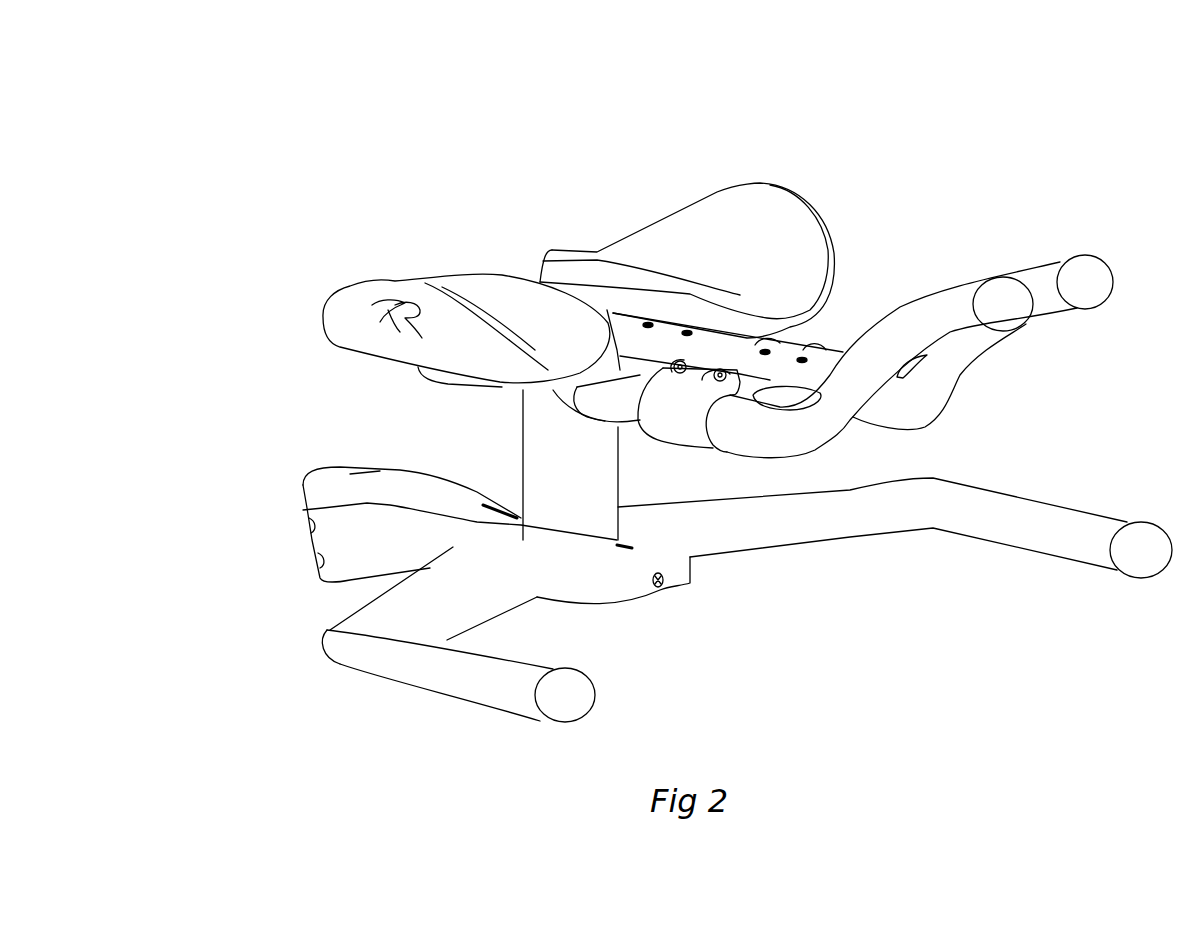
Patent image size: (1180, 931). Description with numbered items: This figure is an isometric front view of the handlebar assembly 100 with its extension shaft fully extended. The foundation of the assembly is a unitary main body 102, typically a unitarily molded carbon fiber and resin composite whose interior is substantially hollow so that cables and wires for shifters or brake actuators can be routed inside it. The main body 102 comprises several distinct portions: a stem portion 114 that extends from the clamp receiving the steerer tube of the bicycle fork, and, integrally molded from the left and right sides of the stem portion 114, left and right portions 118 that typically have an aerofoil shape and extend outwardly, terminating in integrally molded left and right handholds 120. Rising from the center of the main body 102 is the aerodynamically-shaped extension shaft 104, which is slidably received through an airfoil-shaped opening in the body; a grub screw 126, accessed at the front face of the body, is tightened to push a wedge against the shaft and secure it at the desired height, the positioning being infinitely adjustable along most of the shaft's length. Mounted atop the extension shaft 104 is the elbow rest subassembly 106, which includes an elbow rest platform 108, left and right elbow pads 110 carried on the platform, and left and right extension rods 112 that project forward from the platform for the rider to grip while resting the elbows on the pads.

The handlebar assembly 100 is at (226, 144).
The unitary main body 102 is at (628, 618).
The extension shaft 104 is at (538, 468).
The elbow rest subassembly 106 is at (560, 172).
The elbow rest platform 108 is at (788, 367).
The elbow pads 110 is at (450, 293).
The extension rods 112 is at (810, 432).
The stem portion 114 is at (363, 535).
The left and right portions 118 is at (490, 600).
The handholds 120 is at (463, 683).
The grub screw 126 is at (665, 590).